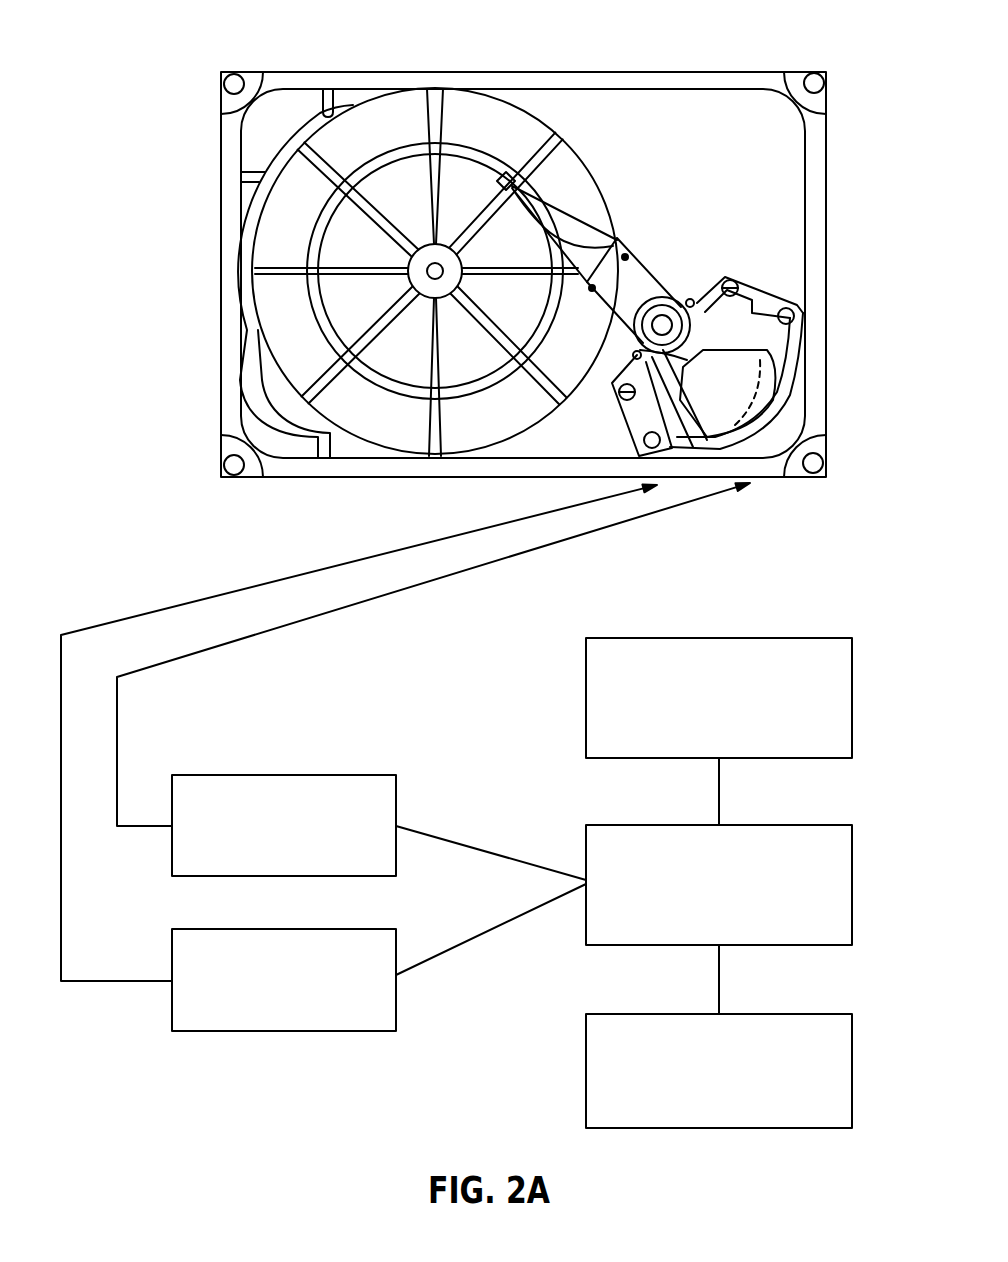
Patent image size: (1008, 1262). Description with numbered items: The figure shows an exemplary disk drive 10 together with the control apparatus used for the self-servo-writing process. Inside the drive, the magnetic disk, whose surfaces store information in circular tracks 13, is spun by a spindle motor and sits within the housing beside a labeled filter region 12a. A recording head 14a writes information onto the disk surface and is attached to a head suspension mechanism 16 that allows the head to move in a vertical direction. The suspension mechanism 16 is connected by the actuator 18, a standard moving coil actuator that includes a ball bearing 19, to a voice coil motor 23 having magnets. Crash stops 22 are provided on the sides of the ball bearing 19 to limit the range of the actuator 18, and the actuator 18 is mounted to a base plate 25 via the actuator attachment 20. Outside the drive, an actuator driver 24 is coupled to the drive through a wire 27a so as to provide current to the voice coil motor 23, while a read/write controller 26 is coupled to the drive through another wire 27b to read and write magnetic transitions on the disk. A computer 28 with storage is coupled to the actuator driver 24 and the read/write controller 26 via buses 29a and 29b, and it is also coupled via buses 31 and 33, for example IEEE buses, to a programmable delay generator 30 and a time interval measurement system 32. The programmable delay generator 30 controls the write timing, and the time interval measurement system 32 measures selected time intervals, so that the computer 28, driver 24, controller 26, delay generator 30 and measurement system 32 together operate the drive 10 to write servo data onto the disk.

The drive 10 is at (240, 548).
The base housing wall 12a is at (246, 330).
The circular tracks 13 is at (278, 227).
The read/write head 14a is at (508, 162).
The head suspension mechanism 16 is at (577, 214).
The actuator 18 is at (657, 294).
The ball bearing 19 is at (658, 365).
The actuator attachment 20 is at (642, 447).
The crash stops 22 is at (692, 299).
The voice coil motor 23 is at (791, 352).
The actuator driver 24 is at (289, 771).
The base plate 25 is at (828, 111).
The read/write controller 26 is at (283, 1034).
The wire 27a is at (117, 735).
The wire 27b is at (63, 899).
The computer 28 is at (826, 823).
The bus 29a is at (470, 942).
The bus 29b is at (500, 855).
The programmable delay generator 30 is at (813, 636).
The bus 31 is at (719, 800).
The time interval measurement system 32 is at (820, 1012).
The bus 33 is at (719, 990).